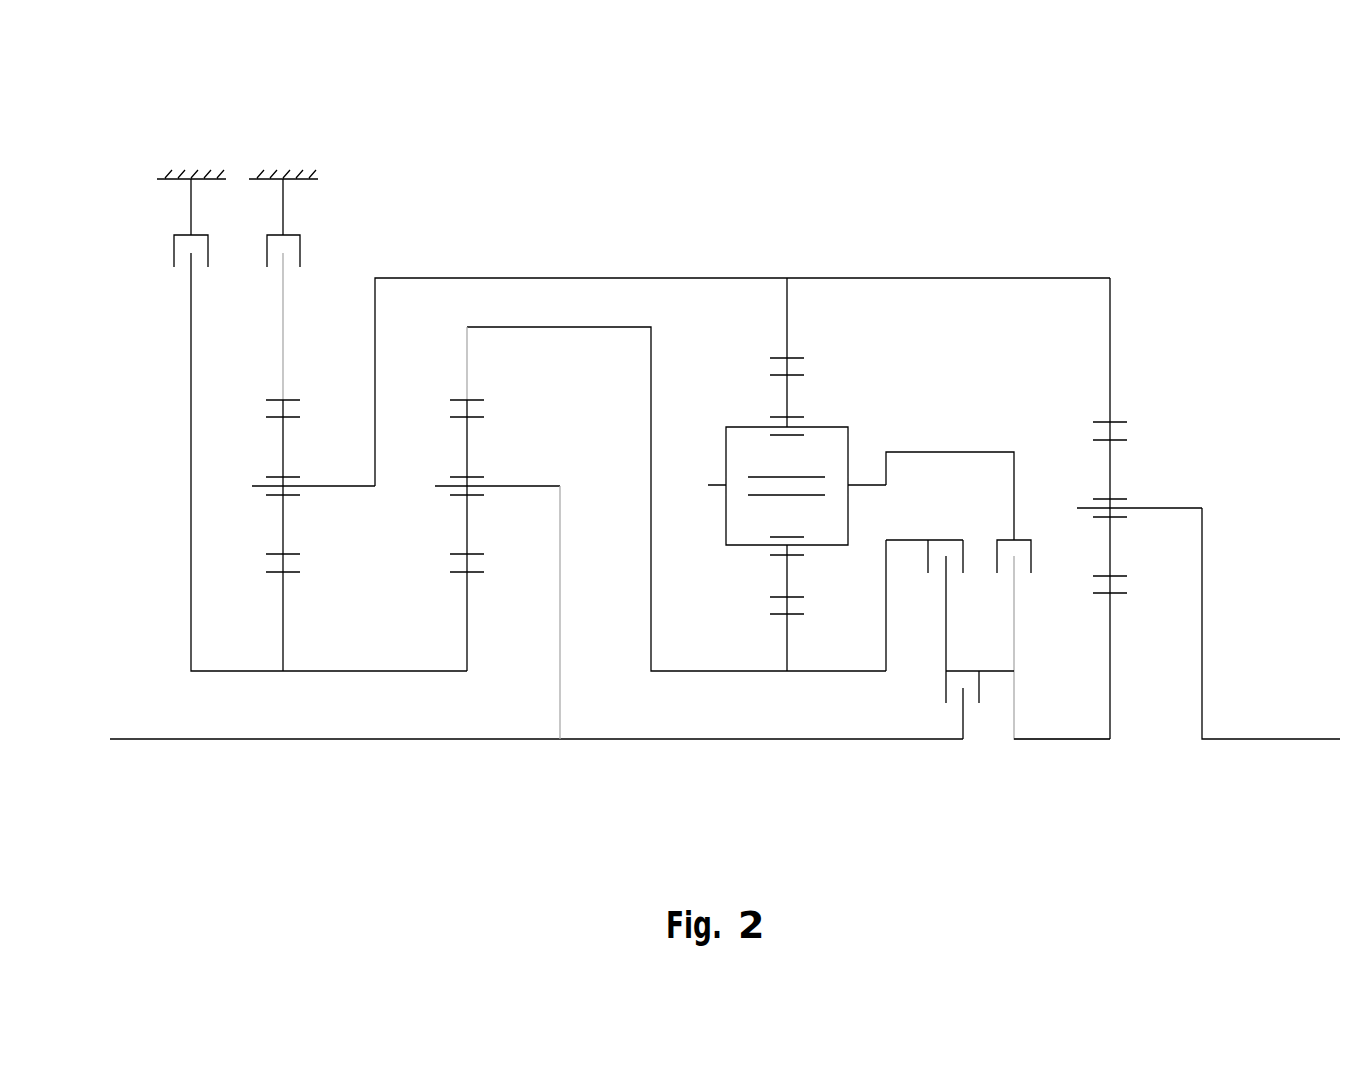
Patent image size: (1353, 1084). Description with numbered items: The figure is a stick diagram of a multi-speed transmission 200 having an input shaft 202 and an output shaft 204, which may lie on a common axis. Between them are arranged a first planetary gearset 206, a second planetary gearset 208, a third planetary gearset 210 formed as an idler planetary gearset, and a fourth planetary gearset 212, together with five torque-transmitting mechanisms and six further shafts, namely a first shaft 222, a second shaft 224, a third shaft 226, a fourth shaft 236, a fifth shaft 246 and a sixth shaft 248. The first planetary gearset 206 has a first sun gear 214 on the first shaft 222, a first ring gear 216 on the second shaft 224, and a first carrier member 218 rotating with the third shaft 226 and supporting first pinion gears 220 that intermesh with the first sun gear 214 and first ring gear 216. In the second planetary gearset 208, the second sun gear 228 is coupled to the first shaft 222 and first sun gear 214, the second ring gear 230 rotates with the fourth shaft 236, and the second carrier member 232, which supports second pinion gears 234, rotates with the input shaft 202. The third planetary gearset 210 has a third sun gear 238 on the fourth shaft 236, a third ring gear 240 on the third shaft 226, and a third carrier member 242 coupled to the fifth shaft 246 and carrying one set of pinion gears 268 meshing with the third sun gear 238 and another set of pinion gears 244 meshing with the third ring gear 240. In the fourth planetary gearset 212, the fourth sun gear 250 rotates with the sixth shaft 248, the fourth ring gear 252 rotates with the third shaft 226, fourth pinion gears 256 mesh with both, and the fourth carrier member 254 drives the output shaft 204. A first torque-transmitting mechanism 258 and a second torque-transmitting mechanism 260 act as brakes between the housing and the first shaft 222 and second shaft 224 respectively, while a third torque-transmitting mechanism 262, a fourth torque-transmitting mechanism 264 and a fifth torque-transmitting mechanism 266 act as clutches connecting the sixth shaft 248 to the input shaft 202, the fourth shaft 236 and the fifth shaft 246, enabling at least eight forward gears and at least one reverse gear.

The multi-speed transmission 200 is at (1223, 170).
The input shaft 202 is at (148, 742).
The output shaft 204 is at (1283, 742).
The first planetary gearset 206 is at (283, 682).
The second planetary gearset 208 is at (467, 682).
The third planetary gearset 210 is at (787, 682).
The fourth planetary gearset 212 is at (1110, 748).
The first sun gear 214 is at (291, 580).
The first ring gear 216 is at (292, 398).
The first carrier member 218 is at (265, 473).
The first pinion gears 220 is at (272, 496).
The first shaft 222 is at (192, 375).
The second shaft 224 is at (283, 355).
The third shaft 226 is at (722, 278).
The second sun gear 228 is at (472, 580).
The second ring gear 230 is at (458, 394).
The second carrier member 232 is at (478, 475).
The second pinion gears 234 is at (455, 496).
The fourth shaft 236 is at (558, 327).
The third sun gear 238 is at (773, 620).
The third ring gear 240 is at (796, 354).
The third carrier member 242 is at (860, 427).
The second set of pinion gears 244 is at (775, 417).
The fifth shaft 246 is at (957, 450).
The sixth shaft 248 is at (1050, 742).
The fourth sun gear 250 is at (1118, 600).
The fourth ring gear 252 is at (1122, 415).
The fourth carrier member 254 is at (1118, 495).
The fourth pinion gears 256 is at (1120, 517).
The first torque-transmitting mechanism 258 is at (165, 241).
The second torque-transmitting mechanism 260 is at (307, 242).
The third torque-transmitting mechanism 262 is at (952, 708).
The fourth torque-transmitting mechanism 264 is at (957, 532).
The fifth torque-transmitting mechanism 266 is at (1027, 578).
The first set of pinion gears 268 is at (795, 557).